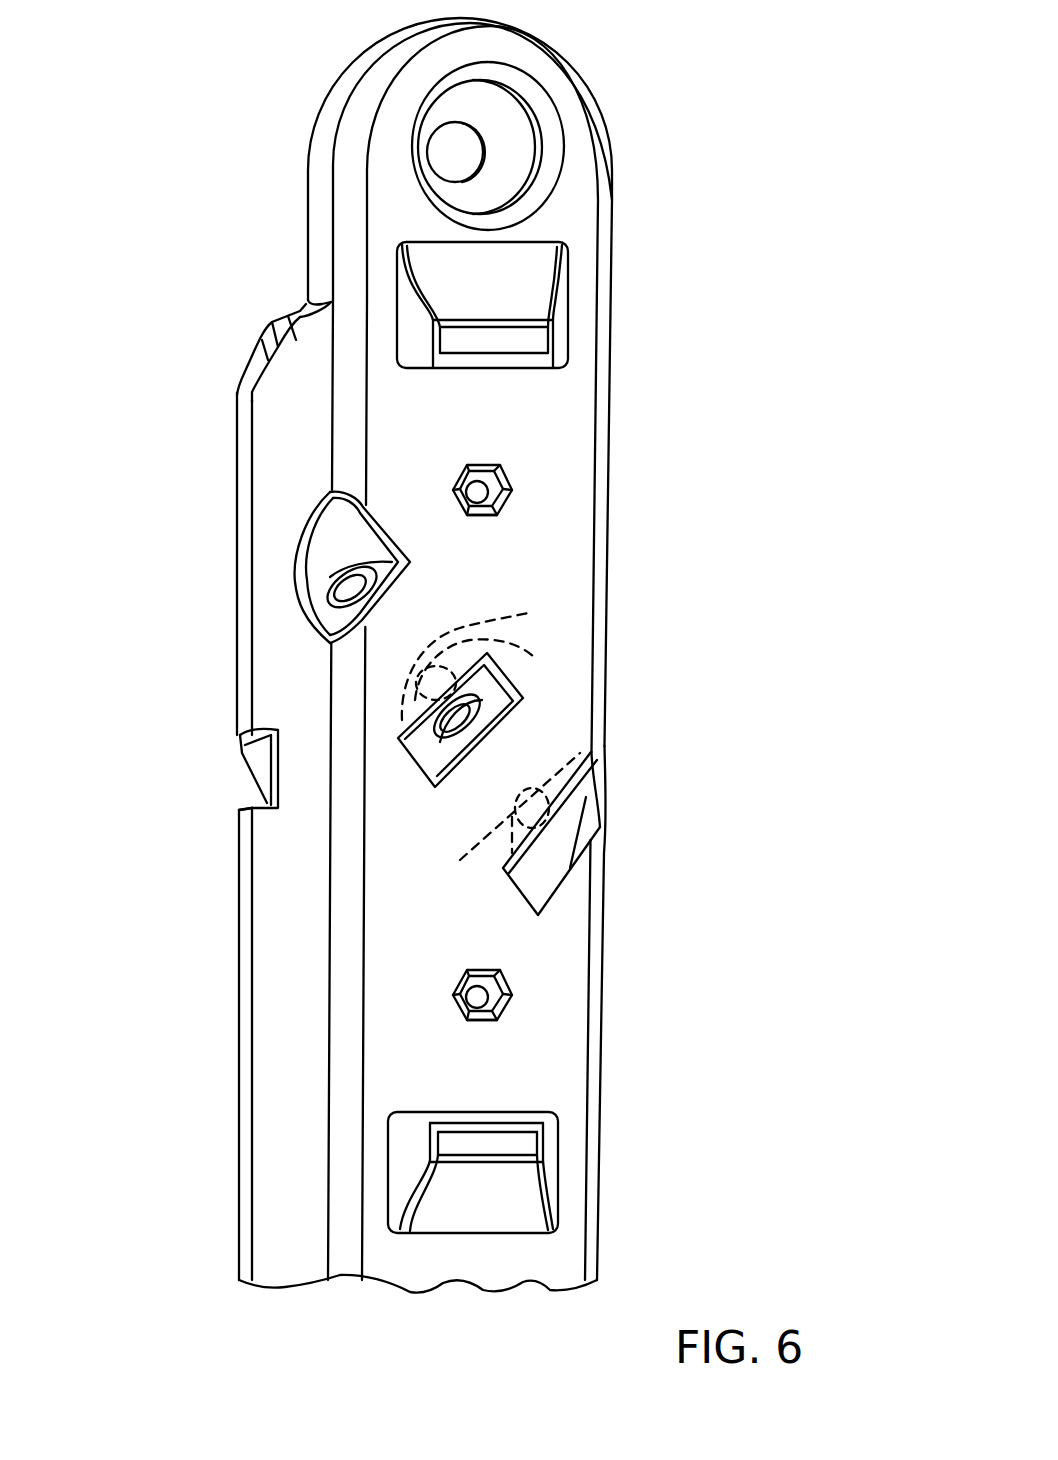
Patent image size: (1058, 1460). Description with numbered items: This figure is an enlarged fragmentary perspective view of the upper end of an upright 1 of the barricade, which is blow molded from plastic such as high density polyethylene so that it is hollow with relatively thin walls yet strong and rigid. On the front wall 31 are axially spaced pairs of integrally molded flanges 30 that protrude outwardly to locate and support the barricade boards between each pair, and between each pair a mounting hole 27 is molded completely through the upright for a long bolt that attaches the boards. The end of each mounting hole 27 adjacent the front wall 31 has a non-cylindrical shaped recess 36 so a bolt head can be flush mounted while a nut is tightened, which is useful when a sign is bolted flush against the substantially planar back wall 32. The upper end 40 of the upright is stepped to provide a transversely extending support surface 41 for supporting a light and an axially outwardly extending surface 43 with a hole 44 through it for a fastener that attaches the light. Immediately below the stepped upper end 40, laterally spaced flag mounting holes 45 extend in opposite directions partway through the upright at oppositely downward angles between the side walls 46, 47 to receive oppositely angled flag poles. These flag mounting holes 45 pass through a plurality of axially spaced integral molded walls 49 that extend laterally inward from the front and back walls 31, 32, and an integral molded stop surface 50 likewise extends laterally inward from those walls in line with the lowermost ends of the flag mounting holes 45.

The upright 1 is at (620, 540).
The mounting hole 27 is at (468, 492).
The flange 30 is at (556, 355).
The front wall 31 is at (385, 962).
The back wall 32 is at (237, 855).
The non-cylindrical shaped recess 36 is at (483, 515).
The upper end 40 is at (330, 438).
The support surface 41 is at (287, 317).
The axially outwardly extending surface 43 is at (330, 97).
The hole 44 is at (462, 153).
The flag mounting hole 45 is at (330, 585).
The side wall 46 is at (275, 1015).
The side wall 47 is at (603, 903).
The integral molded wall 49 is at (380, 573).
The stop surface 50 is at (257, 797).